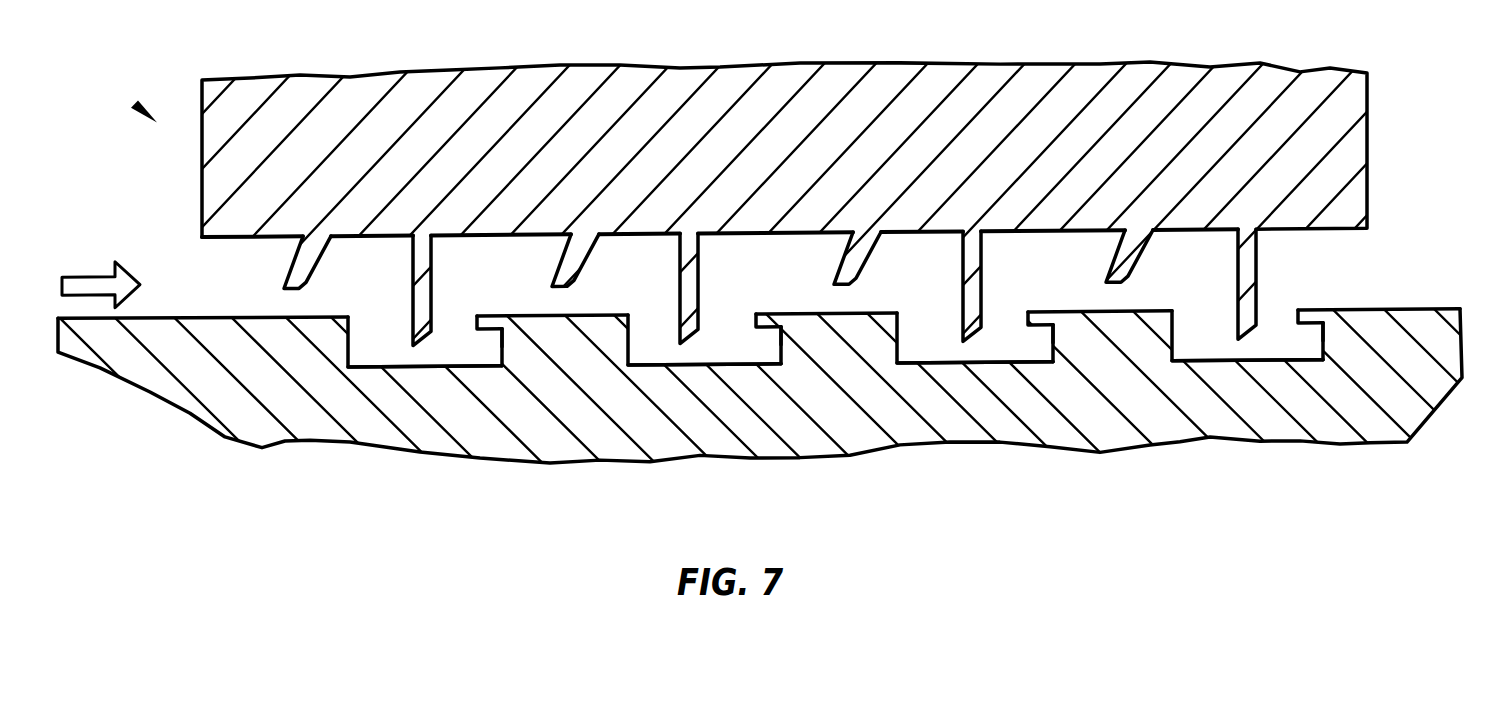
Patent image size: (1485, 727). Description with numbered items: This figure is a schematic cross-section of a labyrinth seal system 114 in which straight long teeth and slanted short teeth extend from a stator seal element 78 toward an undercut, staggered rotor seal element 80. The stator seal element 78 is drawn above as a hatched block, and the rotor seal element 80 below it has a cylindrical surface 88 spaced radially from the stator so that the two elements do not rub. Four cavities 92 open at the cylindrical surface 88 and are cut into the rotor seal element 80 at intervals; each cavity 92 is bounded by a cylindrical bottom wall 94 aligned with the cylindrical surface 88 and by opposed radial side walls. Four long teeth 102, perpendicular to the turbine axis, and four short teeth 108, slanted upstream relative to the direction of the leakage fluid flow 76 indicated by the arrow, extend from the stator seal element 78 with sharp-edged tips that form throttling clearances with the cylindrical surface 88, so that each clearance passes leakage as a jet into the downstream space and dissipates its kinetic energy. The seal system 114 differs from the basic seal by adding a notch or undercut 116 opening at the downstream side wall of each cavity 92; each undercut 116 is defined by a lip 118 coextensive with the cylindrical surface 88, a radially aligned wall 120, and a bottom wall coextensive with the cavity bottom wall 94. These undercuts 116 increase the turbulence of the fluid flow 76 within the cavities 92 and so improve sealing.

The leakage fluid flow 76 is at (102, 278).
The stator seal element 78 is at (202, 195).
The rotor seal element 80 is at (120, 375).
The cylindrical surface 88 is at (240, 316).
The cavity 92 is at (389, 350).
The cylindrical bottom wall 94 is at (404, 366).
The long tooth 102 is at (414, 282).
The short tooth 108 is at (295, 266).
The seal system 114 is at (152, 117).
The undercut 116 is at (492, 350).
The lip 118 is at (505, 323).
The radially aligned wall 120 is at (508, 357).